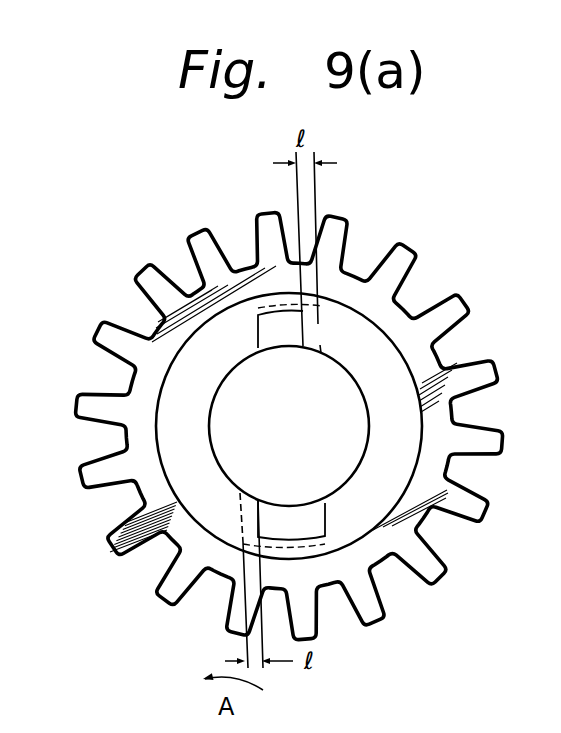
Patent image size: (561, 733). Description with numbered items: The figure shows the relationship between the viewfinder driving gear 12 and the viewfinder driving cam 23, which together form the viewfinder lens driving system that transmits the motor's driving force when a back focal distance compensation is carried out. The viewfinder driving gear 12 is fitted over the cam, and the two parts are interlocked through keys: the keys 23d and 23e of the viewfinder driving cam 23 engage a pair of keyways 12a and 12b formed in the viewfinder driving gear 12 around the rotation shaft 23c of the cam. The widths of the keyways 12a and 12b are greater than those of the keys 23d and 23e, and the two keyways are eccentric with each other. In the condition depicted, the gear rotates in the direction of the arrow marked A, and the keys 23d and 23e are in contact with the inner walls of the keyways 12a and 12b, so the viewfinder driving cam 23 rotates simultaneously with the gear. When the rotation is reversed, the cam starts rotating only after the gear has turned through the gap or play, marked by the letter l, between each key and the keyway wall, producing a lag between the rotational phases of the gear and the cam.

The viewfinder driving gear 12 is at (185, 572).
The keyway 12a is at (313, 337).
The keyway 12b is at (247, 508).
The viewfinder driving cam 23 is at (353, 407).
The rotation shaft 23c is at (313, 441).
The key 23d is at (256, 344).
The key 23e is at (309, 518).